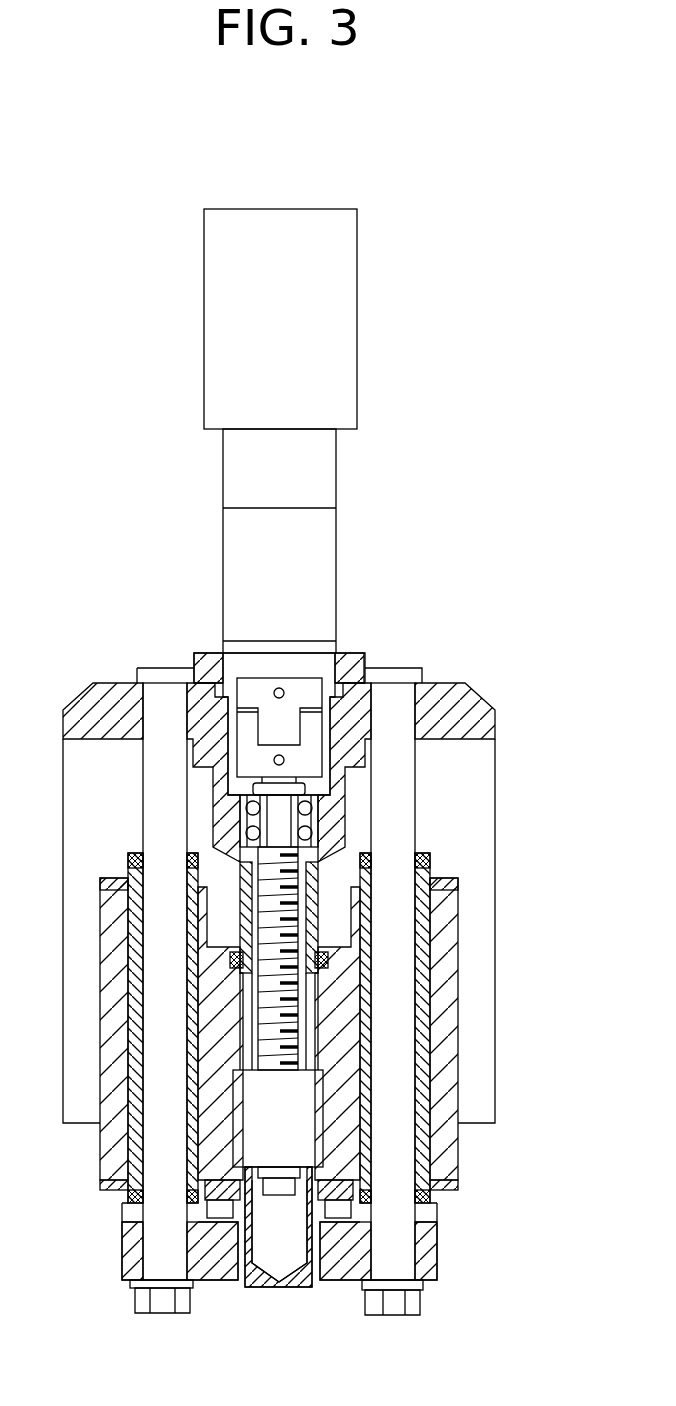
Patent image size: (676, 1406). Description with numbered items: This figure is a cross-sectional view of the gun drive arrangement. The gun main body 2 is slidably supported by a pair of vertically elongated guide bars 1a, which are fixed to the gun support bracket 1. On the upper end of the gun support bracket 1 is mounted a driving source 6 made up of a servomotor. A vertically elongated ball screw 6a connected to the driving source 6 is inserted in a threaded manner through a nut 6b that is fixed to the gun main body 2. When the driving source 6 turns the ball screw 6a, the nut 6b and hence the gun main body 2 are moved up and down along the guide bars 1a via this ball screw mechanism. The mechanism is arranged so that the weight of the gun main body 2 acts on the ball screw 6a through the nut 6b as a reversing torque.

The gun support bracket 1 is at (472, 792).
The guide bars 1a is at (160, 808).
The gun main body 2 is at (448, 1077).
The driving source 6 is at (340, 344).
The ball screw 6a is at (292, 1005).
The nut 6b is at (272, 1155).